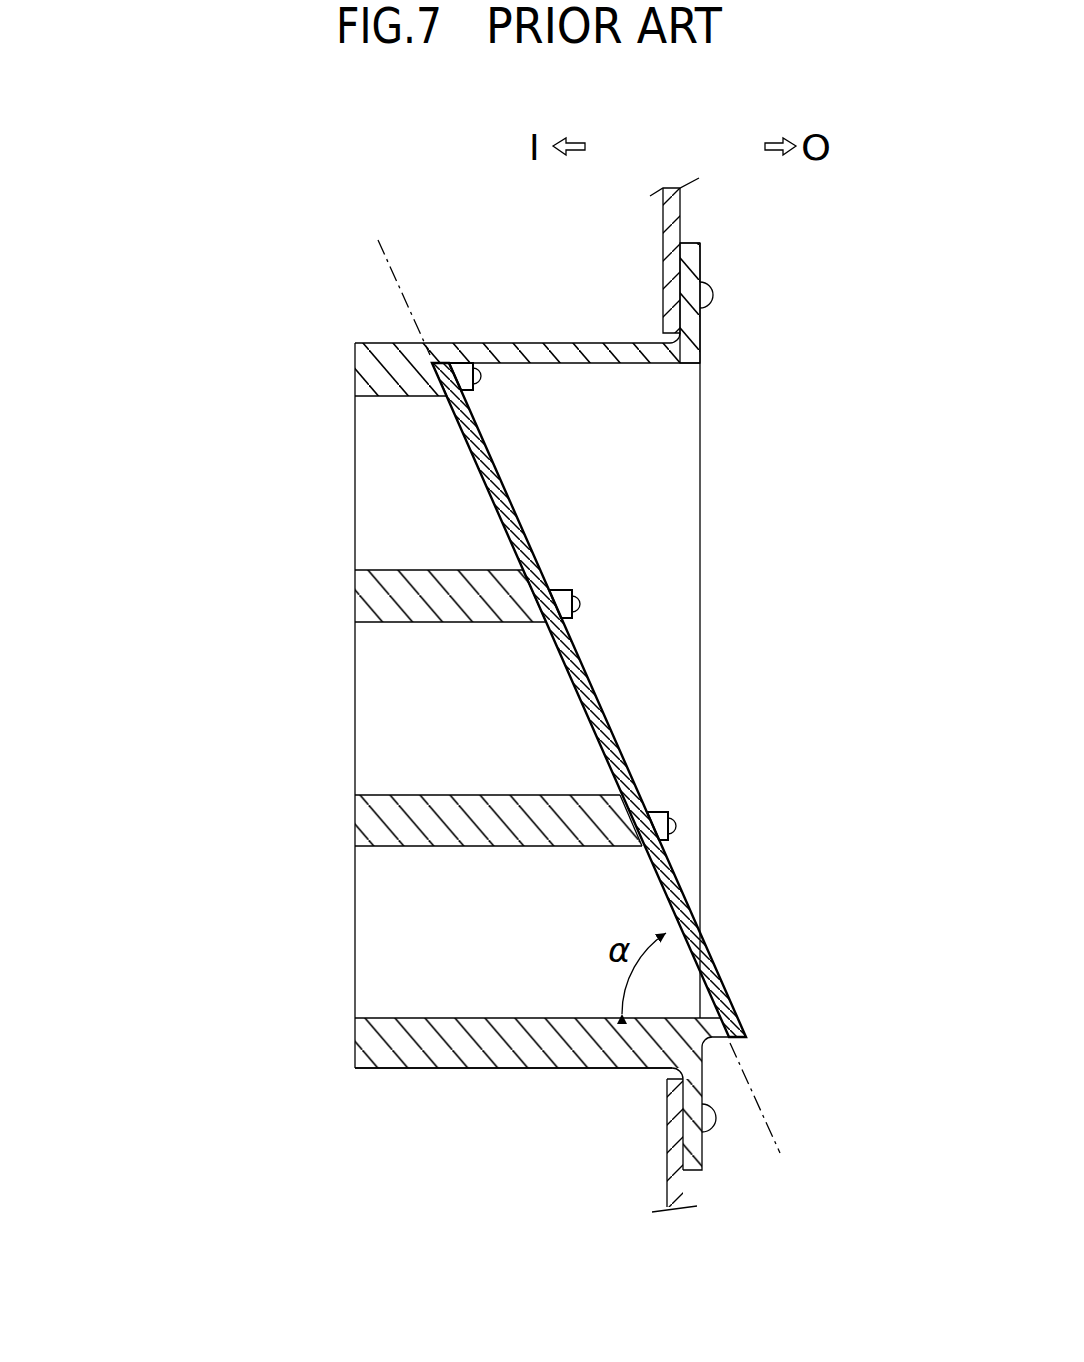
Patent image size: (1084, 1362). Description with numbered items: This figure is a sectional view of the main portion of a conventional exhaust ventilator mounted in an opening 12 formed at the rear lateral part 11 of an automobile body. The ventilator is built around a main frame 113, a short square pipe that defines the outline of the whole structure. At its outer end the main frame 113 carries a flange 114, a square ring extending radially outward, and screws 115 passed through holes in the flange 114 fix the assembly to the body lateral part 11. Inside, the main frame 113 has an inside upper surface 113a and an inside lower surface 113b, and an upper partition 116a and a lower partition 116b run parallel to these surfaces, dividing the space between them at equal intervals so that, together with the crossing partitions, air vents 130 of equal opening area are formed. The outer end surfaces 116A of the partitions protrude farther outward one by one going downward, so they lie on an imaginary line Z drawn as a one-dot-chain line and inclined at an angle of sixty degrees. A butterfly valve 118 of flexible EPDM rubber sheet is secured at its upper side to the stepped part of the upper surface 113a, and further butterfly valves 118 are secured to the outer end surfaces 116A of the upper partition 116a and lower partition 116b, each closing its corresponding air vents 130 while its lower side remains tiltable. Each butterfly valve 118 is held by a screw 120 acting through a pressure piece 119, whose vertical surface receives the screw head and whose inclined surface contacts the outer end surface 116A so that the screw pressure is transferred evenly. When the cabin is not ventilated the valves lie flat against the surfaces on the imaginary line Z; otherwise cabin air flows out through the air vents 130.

The rear lateral part 11 is at (668, 221).
The opening 12 is at (643, 335).
The main frame 113 is at (452, 1068).
The inside upper surface 113a is at (450, 397).
The inside lower surface 113b is at (435, 1012).
The flange 114 is at (690, 266).
The screw 115 is at (706, 300).
The upper partition 116a is at (372, 576).
The lower partition 116b is at (375, 823).
The outer end surface 116A is at (455, 393).
The butterfly valve 118 is at (495, 472).
The pressure piece 119 is at (478, 380).
The screw 120 is at (473, 370).
The air vent 130 is at (372, 538).
The imaginary line Z is at (585, 693).